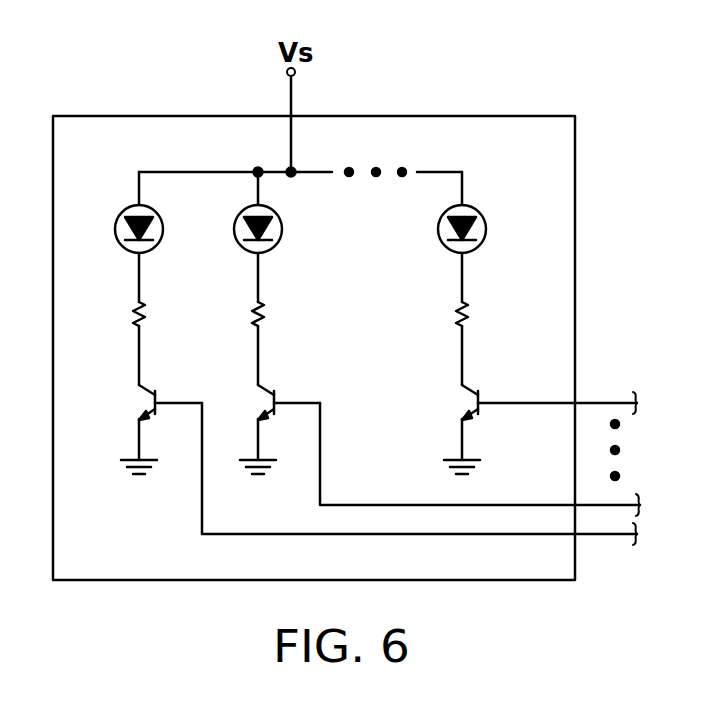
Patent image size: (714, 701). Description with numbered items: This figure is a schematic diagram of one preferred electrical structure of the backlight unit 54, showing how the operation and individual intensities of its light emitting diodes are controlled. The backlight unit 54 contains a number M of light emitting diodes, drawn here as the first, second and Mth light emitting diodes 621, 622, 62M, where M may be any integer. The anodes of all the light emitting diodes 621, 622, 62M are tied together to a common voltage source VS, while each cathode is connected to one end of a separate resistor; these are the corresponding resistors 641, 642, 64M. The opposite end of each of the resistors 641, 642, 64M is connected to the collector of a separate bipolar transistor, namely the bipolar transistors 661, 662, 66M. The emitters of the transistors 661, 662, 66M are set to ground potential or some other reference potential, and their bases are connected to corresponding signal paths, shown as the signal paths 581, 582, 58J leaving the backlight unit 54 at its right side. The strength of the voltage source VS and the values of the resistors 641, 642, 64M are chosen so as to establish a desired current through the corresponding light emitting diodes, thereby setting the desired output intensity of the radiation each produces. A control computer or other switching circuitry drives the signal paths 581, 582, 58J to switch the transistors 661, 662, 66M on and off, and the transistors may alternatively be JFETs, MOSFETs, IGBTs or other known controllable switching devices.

The backlight unit 54 is at (575, 135).
The light emitting diode 621 is at (117, 229).
The light emitting diode 622 is at (281, 231).
The light emitting diode 62M is at (485, 231).
The resistor 641 is at (137, 305).
The resistor 642 is at (263, 312).
The resistor 64M is at (468, 313).
The bipolar transistor 661 is at (157, 395).
The bipolar transistor 662 is at (276, 403).
The bipolar transistor 66M is at (480, 403).
The signal path 58J is at (611, 402).
The signal path 582 is at (620, 505).
The signal path 581 is at (606, 537).